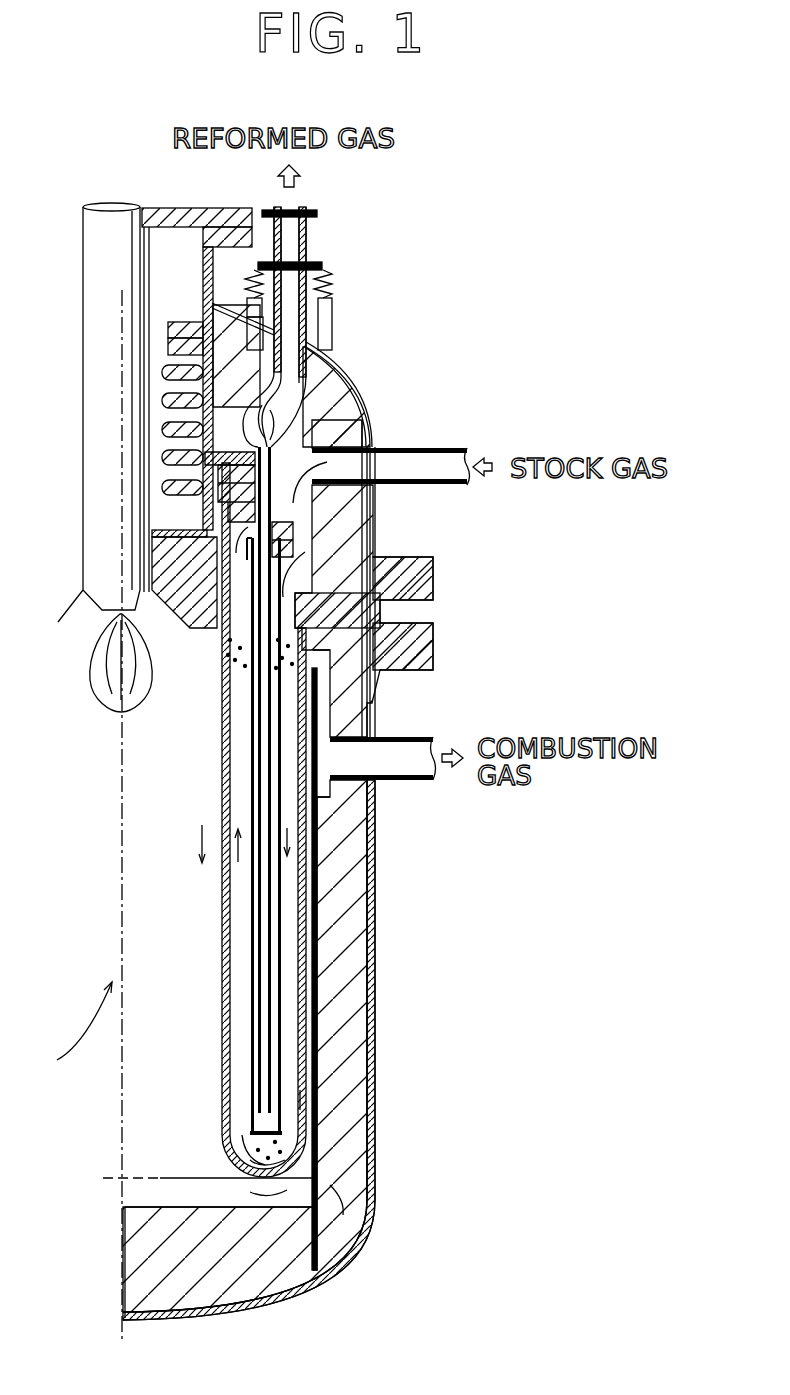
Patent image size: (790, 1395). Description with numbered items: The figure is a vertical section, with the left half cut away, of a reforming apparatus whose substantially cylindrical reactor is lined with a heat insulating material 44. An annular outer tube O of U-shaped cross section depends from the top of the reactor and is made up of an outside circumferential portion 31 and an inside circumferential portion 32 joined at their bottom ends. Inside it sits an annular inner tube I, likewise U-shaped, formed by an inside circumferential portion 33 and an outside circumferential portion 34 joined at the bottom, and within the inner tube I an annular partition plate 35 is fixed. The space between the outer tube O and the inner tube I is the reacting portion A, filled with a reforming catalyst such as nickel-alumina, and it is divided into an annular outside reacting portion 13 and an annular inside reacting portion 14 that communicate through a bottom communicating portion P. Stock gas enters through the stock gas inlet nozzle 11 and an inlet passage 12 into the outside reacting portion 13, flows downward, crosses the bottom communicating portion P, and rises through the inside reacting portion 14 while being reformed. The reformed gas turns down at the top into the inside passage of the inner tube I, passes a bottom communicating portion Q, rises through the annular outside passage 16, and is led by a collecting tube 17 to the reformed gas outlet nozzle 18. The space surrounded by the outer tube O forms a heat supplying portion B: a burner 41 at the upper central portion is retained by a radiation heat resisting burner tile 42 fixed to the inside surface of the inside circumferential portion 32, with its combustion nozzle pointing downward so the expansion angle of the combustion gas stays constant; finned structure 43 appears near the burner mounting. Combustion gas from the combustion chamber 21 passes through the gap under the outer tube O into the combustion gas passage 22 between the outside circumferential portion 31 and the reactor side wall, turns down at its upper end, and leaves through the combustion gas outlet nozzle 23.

The stock gas inlet nozzle 11 is at (420, 447).
The inlet passage 12 is at (300, 510).
The annular outside reacting portion 13 is at (287, 895).
The annular inside reacting portion 14 is at (238, 882).
The annular outside passage 16 is at (280, 700).
The collecting tube 17 is at (313, 390).
The reformed gas outlet nozzle 18 is at (288, 228).
The combustion chamber 21 is at (143, 1133).
The combustion gas passage 22 is at (308, 1098).
The combustion gas outlet nozzle 23 is at (420, 763).
The outside circumferential portion 31 is at (312, 943).
The inside circumferential portion 32 is at (227, 917).
The inside circumferential portion 33 is at (253, 1038).
The outside circumferential portion 34 is at (313, 1047).
The annular partition plate 35 is at (268, 990).
The burner 41 is at (97, 503).
The radiation heat resisting burner tile 42 is at (202, 607).
The cooling fins 43 is at (215, 515).
The heat insulating material 44 is at (340, 1170).
The annular outer tube O is at (318, 865).
The annular inner tube I is at (288, 916).
The bottom communicating portion P is at (287, 1180).
The bottom communicating portion Q is at (287, 1137).
The reacting portion A is at (343, 1202).
The heat supplying portion B is at (72, 1030).